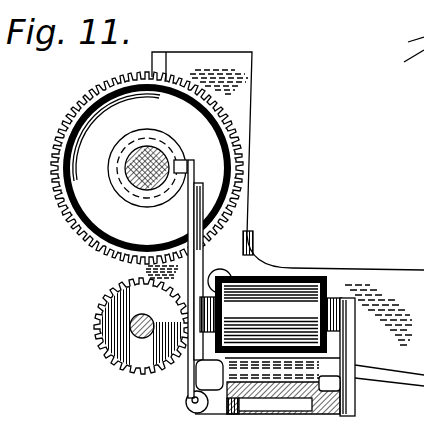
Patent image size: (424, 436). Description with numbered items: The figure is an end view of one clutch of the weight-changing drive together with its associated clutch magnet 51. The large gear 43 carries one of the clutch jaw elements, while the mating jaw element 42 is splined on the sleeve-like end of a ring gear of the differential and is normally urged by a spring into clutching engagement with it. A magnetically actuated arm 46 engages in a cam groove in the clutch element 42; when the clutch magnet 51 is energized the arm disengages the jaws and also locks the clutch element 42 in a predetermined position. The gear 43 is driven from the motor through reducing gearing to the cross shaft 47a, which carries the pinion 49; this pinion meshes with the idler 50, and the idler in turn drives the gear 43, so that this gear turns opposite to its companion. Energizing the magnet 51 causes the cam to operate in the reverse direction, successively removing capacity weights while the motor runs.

The jaw element 42 is at (163, 135).
The gear 43 is at (222, 118).
The magnetically actuated arm 46 is at (203, 194).
The cross shaft 47a is at (132, 334).
The pinion 49 is at (110, 318).
The idler 50 is at (227, 253).
The clutch magnet 51 is at (299, 300).